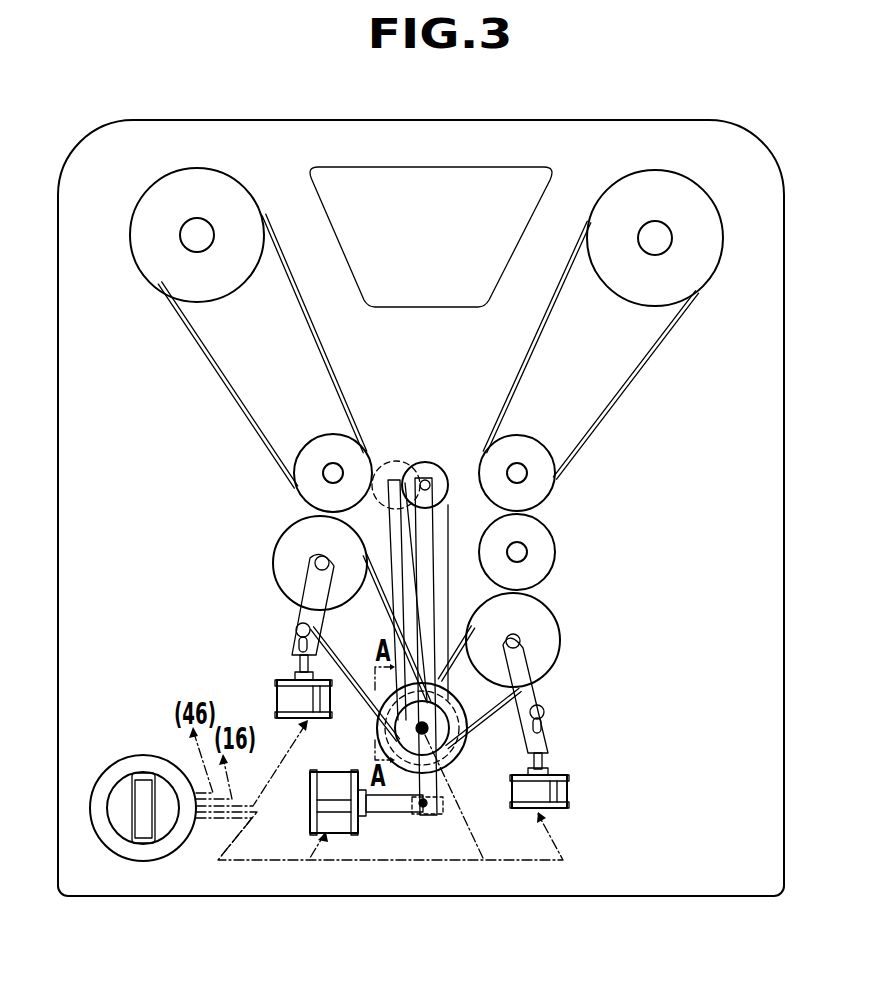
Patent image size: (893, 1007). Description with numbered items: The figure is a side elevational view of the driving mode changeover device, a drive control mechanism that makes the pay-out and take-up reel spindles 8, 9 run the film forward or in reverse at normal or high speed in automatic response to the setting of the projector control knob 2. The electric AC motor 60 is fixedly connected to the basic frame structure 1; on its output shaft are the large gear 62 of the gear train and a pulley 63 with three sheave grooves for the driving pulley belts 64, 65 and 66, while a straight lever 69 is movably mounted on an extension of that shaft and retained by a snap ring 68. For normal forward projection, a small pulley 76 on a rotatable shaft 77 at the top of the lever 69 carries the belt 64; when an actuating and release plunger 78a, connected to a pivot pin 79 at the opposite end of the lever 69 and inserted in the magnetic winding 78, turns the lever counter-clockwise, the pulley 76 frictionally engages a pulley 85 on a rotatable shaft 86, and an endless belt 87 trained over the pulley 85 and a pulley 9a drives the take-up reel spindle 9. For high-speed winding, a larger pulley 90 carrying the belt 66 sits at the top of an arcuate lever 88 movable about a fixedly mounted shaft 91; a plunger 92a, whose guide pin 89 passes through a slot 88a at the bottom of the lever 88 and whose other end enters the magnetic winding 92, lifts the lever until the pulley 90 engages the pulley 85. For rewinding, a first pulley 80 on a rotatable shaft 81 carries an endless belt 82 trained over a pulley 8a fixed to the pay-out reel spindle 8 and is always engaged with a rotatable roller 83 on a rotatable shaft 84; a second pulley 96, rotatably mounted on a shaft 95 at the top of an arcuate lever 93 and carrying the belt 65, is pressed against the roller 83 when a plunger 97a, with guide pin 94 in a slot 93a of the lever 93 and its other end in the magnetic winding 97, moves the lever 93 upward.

The basic frame structure 1 is at (558, 128).
The projector control knob 2 is at (135, 805).
The pay-out reel spindle 8 is at (655, 228).
The pulley 8a is at (716, 240).
The take-up reel spindle 9 is at (183, 236).
The pulley 9a is at (242, 200).
The electric AC motor 60 is at (445, 765).
The large gear 62 is at (383, 745).
The pulley 63 is at (450, 752).
The driving pulley belt 64 is at (449, 593).
The driving pulley belt 65 is at (495, 726).
The driving pulley belt 66 is at (330, 648).
The snap ring 68 is at (456, 702).
The straight lever 69 is at (430, 530).
The pulley 76 is at (426, 470).
The rotatable shaft 77 is at (432, 485).
The magnetic winding 78 is at (325, 806).
The actuating and release plunger 78a is at (385, 812).
The pivot pin 79 is at (425, 815).
The first pulley 80 is at (528, 447).
The rotatable shaft 81 is at (522, 478).
The endless belt 82 is at (642, 380).
The rotatable roller 83 is at (545, 538).
The rotatable shaft 84 is at (523, 556).
The pulley 85 is at (366, 455).
The rotatable shaft 86 is at (330, 466).
The endless belt 87 is at (325, 350).
The arcuate lever 88 is at (305, 598).
The slot 88a is at (300, 646).
The guide pin 89 is at (297, 630).
The pulley 90 is at (305, 534).
The fixedly mounted shaft 91 is at (316, 563).
The magnetic winding 92 is at (292, 702).
The plunger 92a is at (305, 672).
The arcuate lever 93 is at (540, 678).
The slot 93a is at (548, 724).
The guide pin 94 is at (545, 712).
The shaft 95 is at (521, 637).
The second pulley 96 is at (556, 644).
The magnetic winding 97 is at (570, 796).
The plunger 97a is at (548, 763).